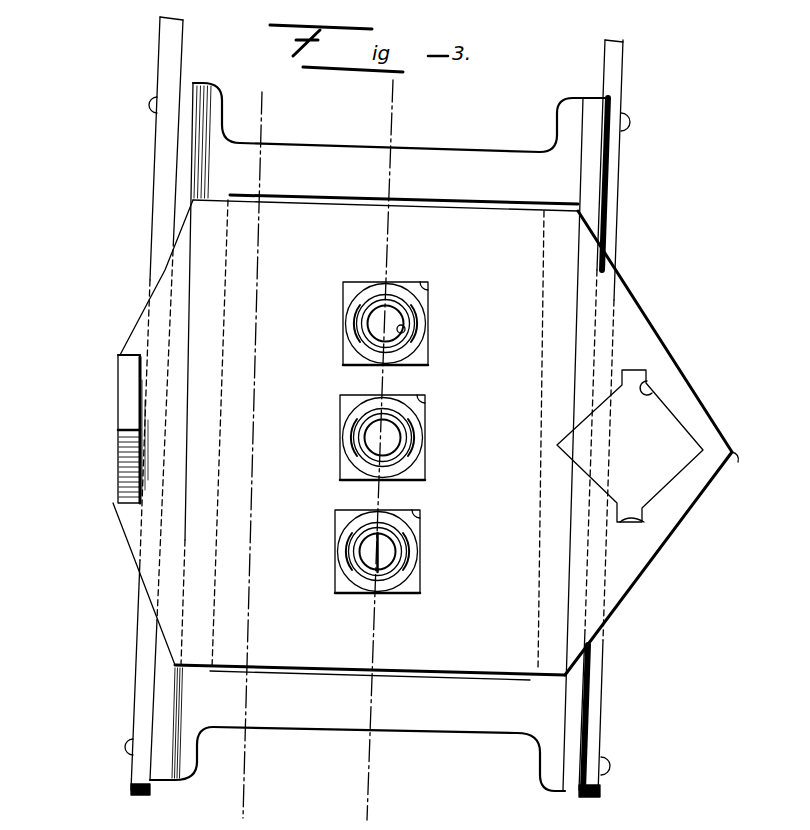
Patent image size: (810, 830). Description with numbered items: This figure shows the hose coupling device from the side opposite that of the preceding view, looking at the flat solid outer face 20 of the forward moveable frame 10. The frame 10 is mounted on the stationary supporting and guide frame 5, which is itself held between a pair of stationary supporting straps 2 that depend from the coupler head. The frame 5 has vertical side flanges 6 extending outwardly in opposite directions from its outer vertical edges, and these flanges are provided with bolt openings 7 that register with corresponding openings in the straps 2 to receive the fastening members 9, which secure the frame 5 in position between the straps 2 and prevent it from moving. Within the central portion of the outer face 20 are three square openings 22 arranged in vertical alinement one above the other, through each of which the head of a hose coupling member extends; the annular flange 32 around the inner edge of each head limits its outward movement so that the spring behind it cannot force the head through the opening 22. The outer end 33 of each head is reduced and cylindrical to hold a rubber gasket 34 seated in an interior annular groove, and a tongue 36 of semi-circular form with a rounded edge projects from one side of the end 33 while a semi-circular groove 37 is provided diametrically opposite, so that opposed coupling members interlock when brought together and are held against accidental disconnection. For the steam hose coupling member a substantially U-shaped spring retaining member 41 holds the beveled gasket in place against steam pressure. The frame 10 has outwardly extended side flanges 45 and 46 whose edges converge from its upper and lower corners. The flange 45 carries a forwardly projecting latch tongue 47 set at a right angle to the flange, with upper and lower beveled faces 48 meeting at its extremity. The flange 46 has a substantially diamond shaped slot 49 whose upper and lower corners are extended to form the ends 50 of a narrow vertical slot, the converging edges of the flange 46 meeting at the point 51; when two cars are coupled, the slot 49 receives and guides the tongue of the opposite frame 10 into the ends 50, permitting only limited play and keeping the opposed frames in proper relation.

The stationary supporting straps 2 is at (172, 40).
The stationary supporting and guide frame 5 is at (440, 152).
The vertical side flanges 6 is at (393, 113).
The bolt openings 7 is at (262, 117).
The fastening members 9 is at (149, 108).
The forward moveable frame 10 is at (296, 197).
The flat solid outer face 20 is at (339, 440).
The square openings 22 is at (430, 295).
The annular flange 32 is at (420, 352).
The reduced outer end 33 is at (365, 300).
The rubber gasket 34 is at (401, 329).
The tongue 36 is at (350, 332).
The semi-circular groove 37 is at (415, 315).
The spring retaining member 41 is at (372, 540).
The side flange 45 is at (152, 389).
The side flange 46 is at (640, 332).
The latch tongue 47 is at (132, 364).
The beveled faces 48 is at (120, 437).
The diamond shaped slot 49 is at (668, 437).
The ends of narrow vertical slot 50 is at (650, 398).
The point 51 is at (740, 458).